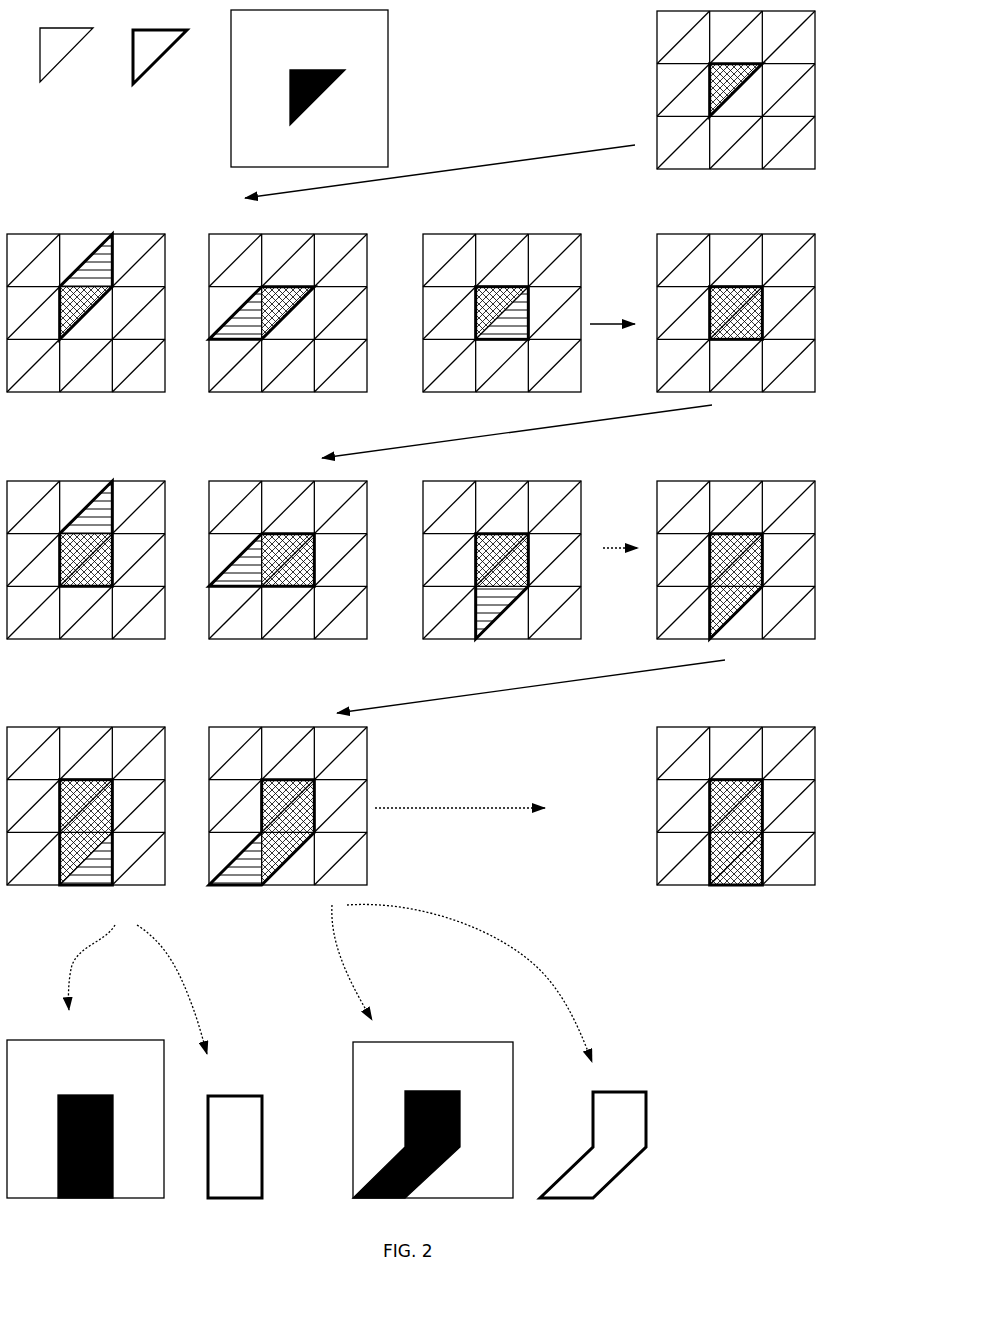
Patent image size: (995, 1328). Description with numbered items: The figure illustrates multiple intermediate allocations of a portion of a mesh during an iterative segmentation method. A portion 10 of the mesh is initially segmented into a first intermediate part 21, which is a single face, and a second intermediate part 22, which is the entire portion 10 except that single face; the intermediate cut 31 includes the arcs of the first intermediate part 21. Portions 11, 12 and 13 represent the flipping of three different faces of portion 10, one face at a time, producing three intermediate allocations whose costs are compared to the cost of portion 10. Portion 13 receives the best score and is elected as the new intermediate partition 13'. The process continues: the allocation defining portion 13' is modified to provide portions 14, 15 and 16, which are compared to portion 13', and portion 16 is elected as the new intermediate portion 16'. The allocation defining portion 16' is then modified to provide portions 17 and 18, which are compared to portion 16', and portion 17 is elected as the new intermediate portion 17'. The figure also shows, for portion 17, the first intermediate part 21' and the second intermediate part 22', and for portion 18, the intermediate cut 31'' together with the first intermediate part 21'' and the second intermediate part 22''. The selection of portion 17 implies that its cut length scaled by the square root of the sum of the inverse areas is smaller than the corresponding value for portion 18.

The portion of a mesh 10 is at (750, 196).
The portion 11 is at (93, 424).
The portion 12 is at (303, 424).
The portion 13 is at (502, 329).
The new intermediate partition 13' is at (736, 329).
The portion 14 is at (98, 676).
The portion 15 is at (293, 676).
The portion 16 is at (502, 577).
The new intermediate portion 16' is at (736, 577).
The portion 17 is at (86, 825).
The portion 18 is at (295, 919).
The new intermediate portion 17' is at (736, 824).
The first intermediate part P1 21 is at (68, 59).
The second intermediate part P2 22 is at (309, 88).
The intermediate cut 31 is at (177, 67).
The second intermediate part 22' is at (85, 1119).
The first intermediate part P1' 21' is at (235, 1129).
The second intermediate part 22'' is at (433, 1120).
The first intermediate part P1'' 21'' is at (593, 1145).
The intermediate cut 31'' is at (594, 1127).